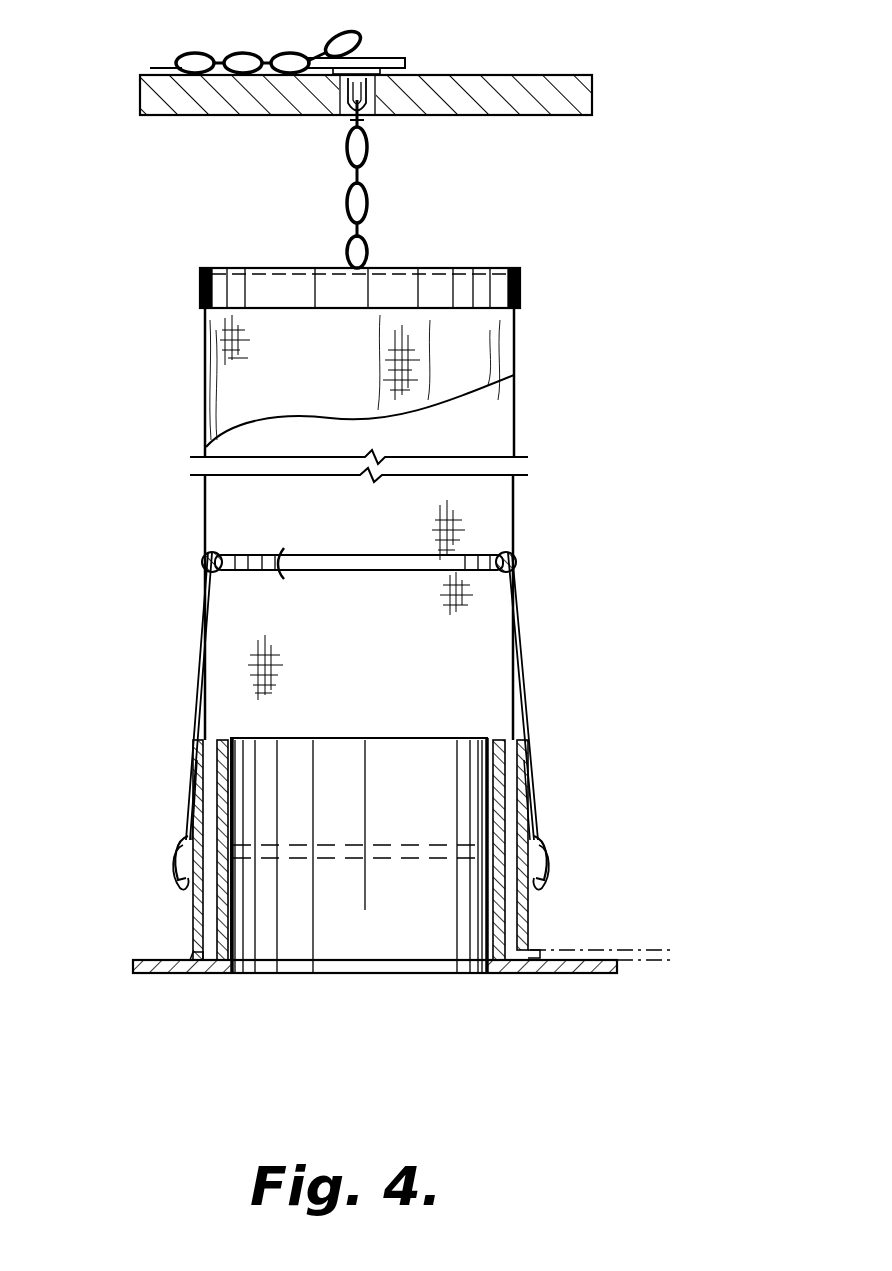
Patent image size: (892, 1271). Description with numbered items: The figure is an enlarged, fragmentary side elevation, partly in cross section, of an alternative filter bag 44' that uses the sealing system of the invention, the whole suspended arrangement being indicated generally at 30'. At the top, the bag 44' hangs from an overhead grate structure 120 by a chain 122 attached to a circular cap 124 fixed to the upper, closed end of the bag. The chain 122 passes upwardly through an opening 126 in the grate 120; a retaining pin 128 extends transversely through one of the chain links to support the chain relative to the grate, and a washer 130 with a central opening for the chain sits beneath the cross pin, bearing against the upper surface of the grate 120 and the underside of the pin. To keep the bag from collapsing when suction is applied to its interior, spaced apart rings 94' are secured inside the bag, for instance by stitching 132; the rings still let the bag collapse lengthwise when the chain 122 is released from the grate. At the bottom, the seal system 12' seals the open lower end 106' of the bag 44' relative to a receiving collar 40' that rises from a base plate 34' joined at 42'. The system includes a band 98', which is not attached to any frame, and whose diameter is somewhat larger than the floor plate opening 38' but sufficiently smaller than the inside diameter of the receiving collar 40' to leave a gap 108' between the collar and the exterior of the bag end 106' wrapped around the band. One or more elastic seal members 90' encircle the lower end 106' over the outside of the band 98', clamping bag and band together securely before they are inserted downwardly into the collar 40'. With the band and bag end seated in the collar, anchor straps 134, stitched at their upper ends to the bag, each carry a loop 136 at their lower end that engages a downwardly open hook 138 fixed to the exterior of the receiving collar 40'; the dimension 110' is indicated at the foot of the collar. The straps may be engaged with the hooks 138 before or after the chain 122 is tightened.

The overhead grate structure 120 is at (145, 97).
The chain 122 is at (368, 207).
The circular cap 124 is at (482, 268).
The opening 126 is at (365, 118).
The retaining pin 128 is at (383, 62).
The washer 130 is at (393, 68).
The bag assembly 30' is at (258, 195).
The filter bag 44' is at (392, 524).
The stitching 132 is at (516, 544).
The rings 94' is at (359, 590).
The anchor straps 134 is at (186, 722).
The seal system 12' is at (614, 722).
The band 98' is at (313, 850).
The elastic seal members 90' is at (353, 800).
The loop 136 is at (173, 832).
The hook 138 is at (170, 860).
The receiving collar 40' is at (317, 850).
The base plate 34' is at (315, 969).
The base weld 42' is at (200, 1000).
The floor plate opening 38' is at (359, 884).
The open lower end of the filter bag 106' is at (591, 929).
The flange thickness 110' is at (699, 950).
The gap 108' is at (520, 1023).